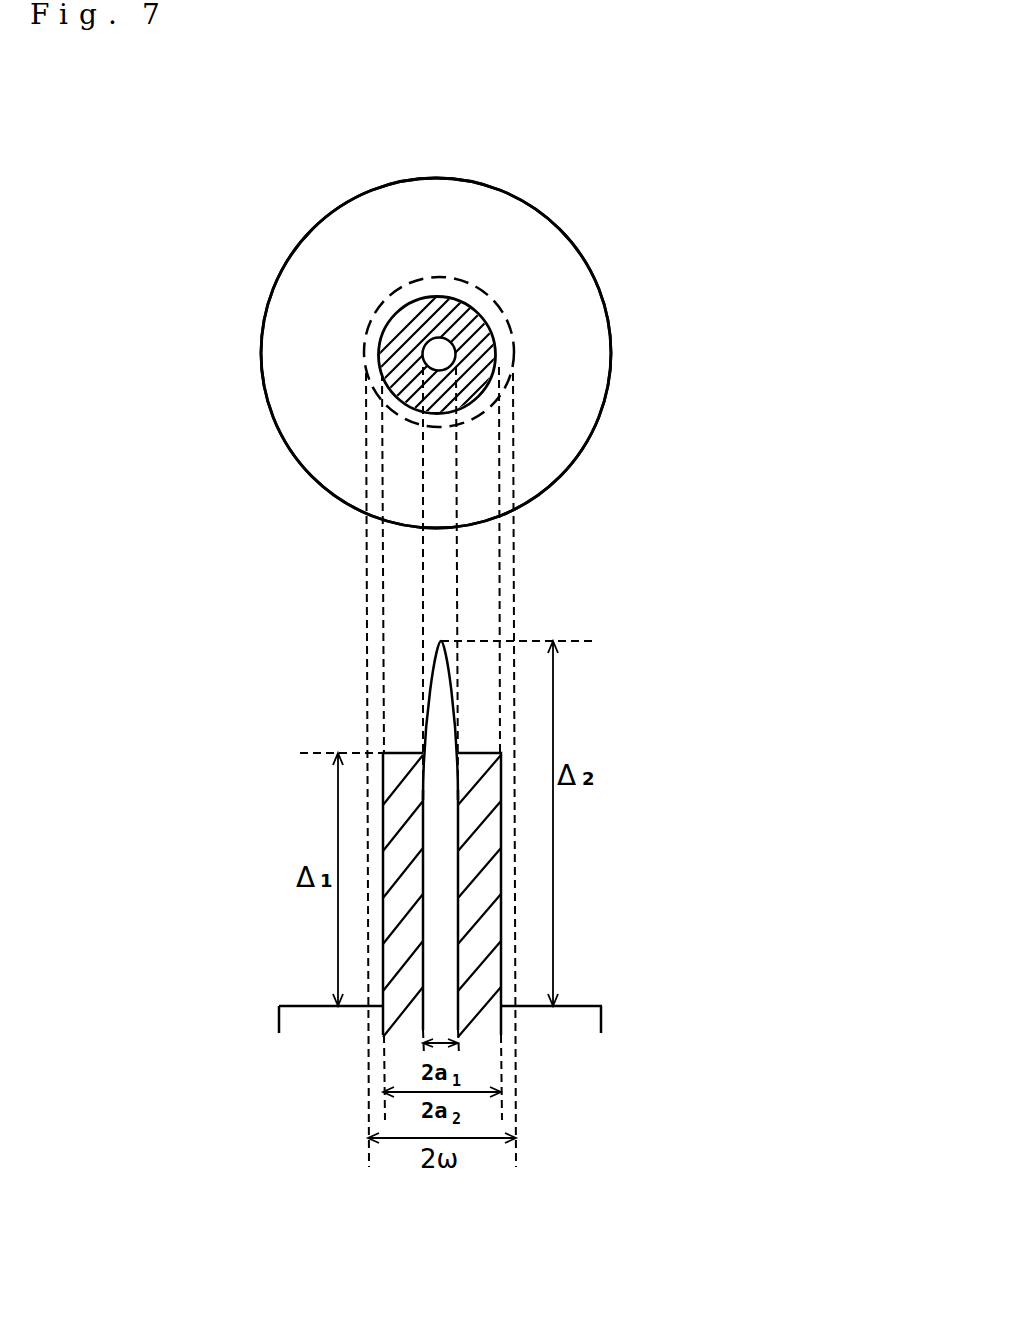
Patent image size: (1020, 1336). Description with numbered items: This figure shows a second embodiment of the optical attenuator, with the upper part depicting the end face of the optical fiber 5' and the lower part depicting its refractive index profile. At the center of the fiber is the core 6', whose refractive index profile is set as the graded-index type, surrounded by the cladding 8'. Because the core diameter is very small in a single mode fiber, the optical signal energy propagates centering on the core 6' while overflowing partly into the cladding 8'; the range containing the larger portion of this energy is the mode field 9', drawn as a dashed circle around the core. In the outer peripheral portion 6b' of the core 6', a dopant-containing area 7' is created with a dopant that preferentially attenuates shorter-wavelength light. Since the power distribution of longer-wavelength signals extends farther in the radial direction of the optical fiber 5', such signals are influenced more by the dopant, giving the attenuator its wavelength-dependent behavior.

The optical fiber 5' is at (575, 353).
The core 6' is at (571, 355).
The peripheral portion of core 6b' is at (448, 244).
The dopant-containing area 7' is at (643, 425).
The cladding 8' is at (500, 353).
The mode field 9' is at (562, 286).